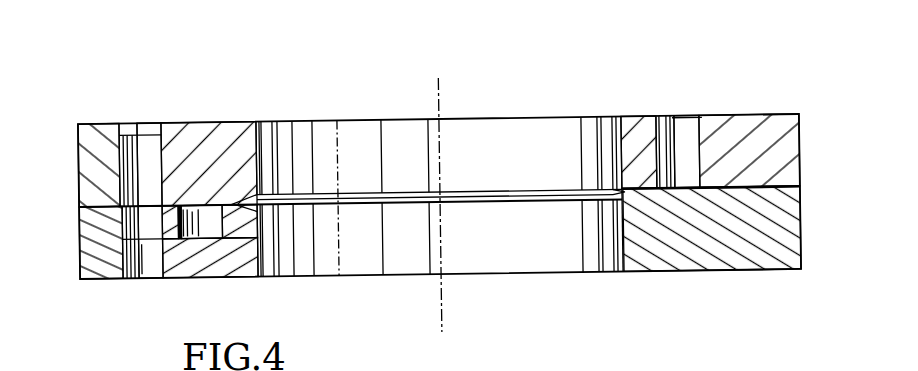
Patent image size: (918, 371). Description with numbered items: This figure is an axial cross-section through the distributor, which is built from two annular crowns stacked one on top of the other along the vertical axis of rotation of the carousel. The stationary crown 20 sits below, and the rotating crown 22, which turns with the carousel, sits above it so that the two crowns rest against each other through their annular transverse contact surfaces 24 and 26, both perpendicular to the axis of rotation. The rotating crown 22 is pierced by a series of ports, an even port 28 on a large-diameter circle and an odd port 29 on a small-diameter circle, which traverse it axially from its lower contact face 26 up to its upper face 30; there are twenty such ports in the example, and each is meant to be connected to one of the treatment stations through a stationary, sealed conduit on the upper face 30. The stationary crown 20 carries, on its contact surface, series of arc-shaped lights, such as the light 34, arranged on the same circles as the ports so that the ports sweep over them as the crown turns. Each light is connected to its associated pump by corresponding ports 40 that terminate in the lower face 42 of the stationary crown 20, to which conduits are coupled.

The stationary crown 20 is at (752, 250).
The rotating crown 22 is at (753, 143).
The transverse contact surface 24 is at (650, 158).
The lower contact face 26 is at (717, 193).
The even port 28 is at (147, 140).
The odd port 29 is at (688, 145).
The upper face 30 is at (198, 122).
The light 34 is at (120, 213).
The port of stationary crown 40 is at (150, 268).
The lower face 42 is at (201, 279).